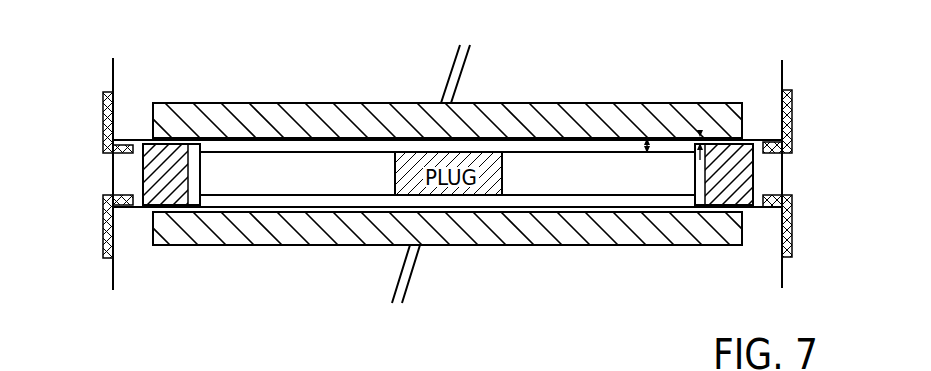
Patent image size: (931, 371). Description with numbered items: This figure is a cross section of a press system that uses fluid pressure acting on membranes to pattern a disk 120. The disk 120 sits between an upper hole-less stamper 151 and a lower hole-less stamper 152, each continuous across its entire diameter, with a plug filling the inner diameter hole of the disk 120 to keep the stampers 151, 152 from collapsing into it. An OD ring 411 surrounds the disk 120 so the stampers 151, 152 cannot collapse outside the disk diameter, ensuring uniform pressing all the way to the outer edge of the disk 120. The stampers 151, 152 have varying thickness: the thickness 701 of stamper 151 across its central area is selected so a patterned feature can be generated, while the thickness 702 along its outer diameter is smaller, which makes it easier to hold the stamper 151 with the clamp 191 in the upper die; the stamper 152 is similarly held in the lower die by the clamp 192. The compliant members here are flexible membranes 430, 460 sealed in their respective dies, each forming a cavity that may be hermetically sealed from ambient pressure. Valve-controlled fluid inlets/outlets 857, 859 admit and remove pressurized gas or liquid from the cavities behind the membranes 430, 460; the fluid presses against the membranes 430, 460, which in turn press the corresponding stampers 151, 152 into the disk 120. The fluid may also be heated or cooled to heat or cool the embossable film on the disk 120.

The disk 120 is at (652, 187).
The stamper 151 is at (325, 158).
The stamper 152 is at (357, 210).
The clamp 191 is at (792, 112).
The clamp 192 is at (792, 230).
The OD ring 411 is at (792, 172).
The membrane compliant member 430 is at (552, 117).
The membrane compliant member 460 is at (625, 235).
The thickness 701 is at (647, 143).
The thickness 702 is at (700, 131).
The valve-controlled fluid inlet/outlet 857 is at (463, 58).
The valve-controlled fluid inlet/outlet 859 is at (415, 270).